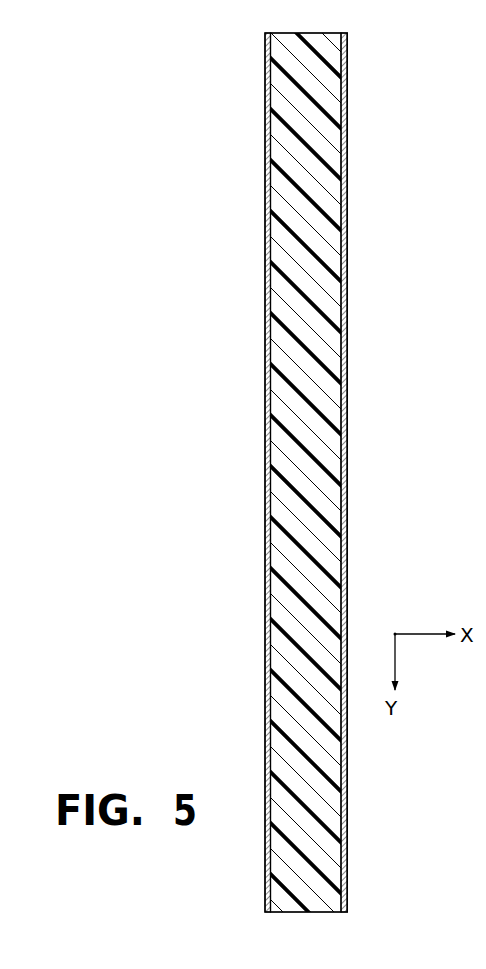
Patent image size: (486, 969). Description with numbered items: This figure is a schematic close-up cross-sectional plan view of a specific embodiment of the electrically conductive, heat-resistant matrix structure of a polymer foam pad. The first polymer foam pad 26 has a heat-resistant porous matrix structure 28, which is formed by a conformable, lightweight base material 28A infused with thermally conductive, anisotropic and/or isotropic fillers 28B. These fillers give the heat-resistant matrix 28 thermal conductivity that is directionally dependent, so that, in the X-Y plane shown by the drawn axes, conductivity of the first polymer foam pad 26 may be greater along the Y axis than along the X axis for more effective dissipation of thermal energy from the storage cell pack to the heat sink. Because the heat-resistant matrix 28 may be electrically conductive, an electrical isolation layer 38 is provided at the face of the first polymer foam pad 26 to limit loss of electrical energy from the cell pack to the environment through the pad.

The heat-resistant porous matrix structure 28 is at (366, 484).
The first polymer foam pad 26 is at (313, 293).
The electrical isolation layer 38 is at (347, 383).
The base material 28A is at (348, 470).
The thermally conductive fillers 28B is at (332, 568).